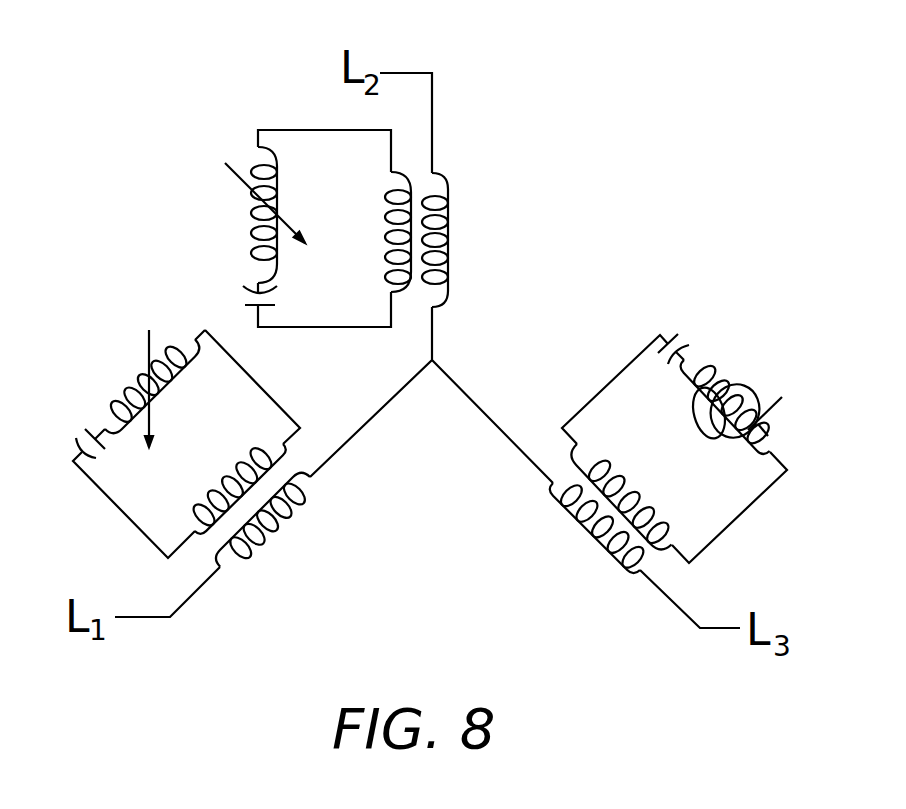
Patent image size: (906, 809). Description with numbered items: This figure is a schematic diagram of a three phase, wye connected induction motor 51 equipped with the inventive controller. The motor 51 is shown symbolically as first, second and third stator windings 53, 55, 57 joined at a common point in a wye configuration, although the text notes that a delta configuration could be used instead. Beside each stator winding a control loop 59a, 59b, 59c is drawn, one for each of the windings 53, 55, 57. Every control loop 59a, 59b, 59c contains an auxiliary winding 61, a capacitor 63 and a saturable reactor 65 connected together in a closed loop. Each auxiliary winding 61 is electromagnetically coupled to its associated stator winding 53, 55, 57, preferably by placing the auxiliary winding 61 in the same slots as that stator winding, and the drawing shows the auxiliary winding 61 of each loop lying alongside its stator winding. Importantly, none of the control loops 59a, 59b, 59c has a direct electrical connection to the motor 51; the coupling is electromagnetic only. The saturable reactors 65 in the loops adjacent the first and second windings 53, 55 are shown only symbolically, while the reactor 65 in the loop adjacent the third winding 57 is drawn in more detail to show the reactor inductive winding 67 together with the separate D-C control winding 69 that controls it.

The three phase induction motor 51 is at (442, 515).
The first stator winding 53 is at (273, 527).
The second stator winding 55 is at (448, 213).
The third stator winding 57 is at (588, 530).
The control loop 59a is at (130, 524).
The control loop 59b is at (305, 130).
The control loop 59c is at (618, 370).
The auxiliary winding 61 is at (388, 197).
The capacitor 63 is at (242, 297).
The saturable reactor 65 is at (248, 213).
The reactor inductive winding 67 is at (767, 435).
The D-C control winding 69 is at (713, 382).